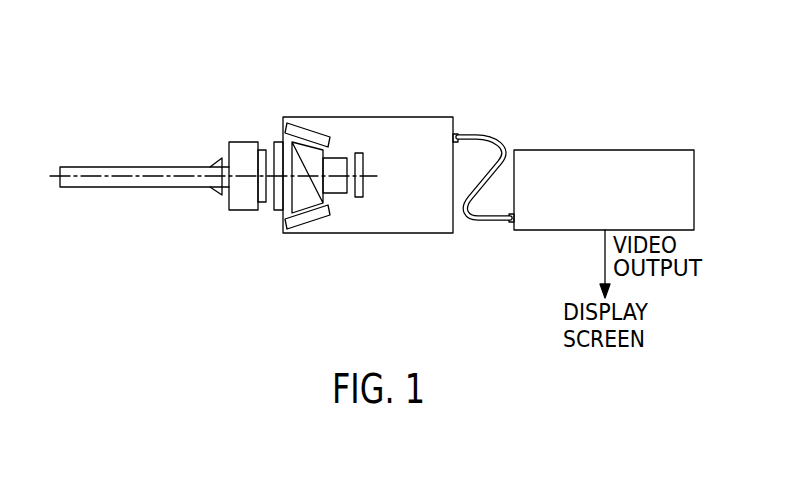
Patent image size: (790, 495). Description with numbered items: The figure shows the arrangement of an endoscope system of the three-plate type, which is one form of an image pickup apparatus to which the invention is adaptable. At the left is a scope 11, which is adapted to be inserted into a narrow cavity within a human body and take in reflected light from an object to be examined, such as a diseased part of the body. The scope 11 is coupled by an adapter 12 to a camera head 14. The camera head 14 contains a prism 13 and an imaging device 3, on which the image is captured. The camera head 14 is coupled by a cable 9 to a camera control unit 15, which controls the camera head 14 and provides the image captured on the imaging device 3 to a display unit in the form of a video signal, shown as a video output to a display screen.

The scope 11 is at (112, 188).
The adapter 12 is at (243, 210).
The camera head 14 is at (333, 116).
The prism 13 is at (341, 200).
The imaging device 3 is at (362, 203).
The cable 9 is at (480, 132).
The camera control unit 15 is at (583, 150).